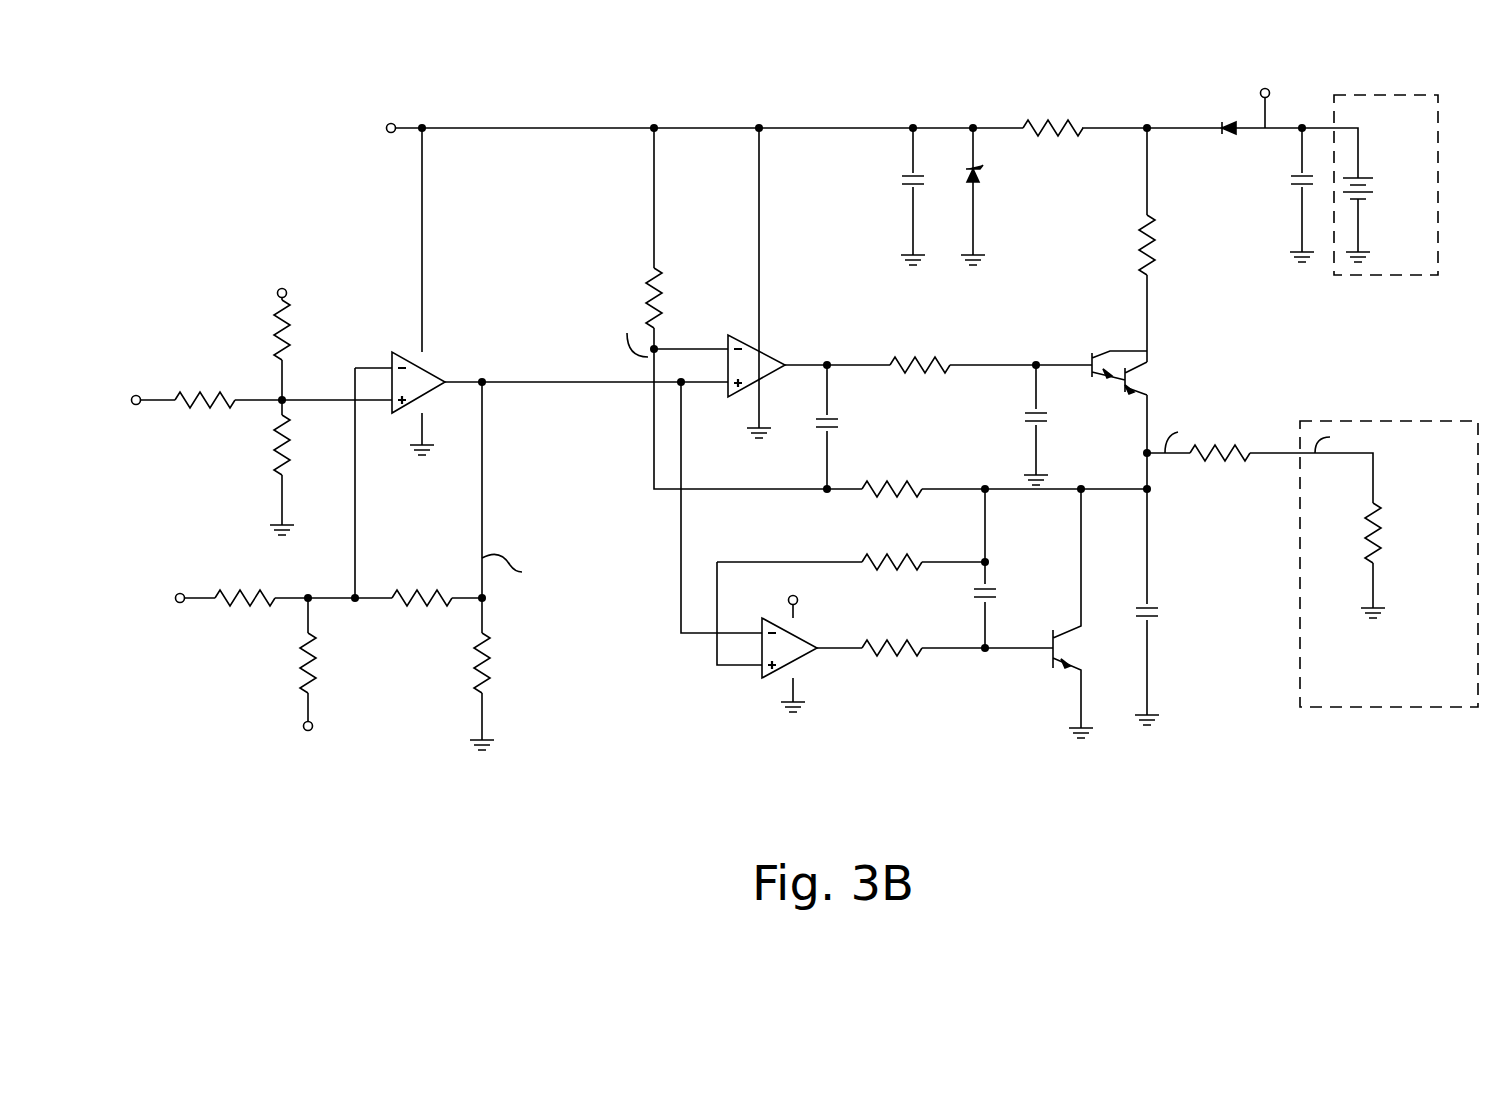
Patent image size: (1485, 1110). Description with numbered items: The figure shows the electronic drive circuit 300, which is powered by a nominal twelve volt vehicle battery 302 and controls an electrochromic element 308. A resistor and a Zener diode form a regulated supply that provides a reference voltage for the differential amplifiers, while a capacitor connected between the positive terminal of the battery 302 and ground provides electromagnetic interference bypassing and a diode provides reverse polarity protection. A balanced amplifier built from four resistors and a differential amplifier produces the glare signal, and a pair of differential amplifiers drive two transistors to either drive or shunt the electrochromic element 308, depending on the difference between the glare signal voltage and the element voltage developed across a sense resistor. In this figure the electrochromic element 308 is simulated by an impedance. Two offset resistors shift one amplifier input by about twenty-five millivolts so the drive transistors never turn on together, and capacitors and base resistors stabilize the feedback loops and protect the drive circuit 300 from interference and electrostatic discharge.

The electronic drive circuit 300 is at (847, 79).
The vehicle battery 302 is at (1375, 275).
The electrochromic element 308 is at (1298, 683).